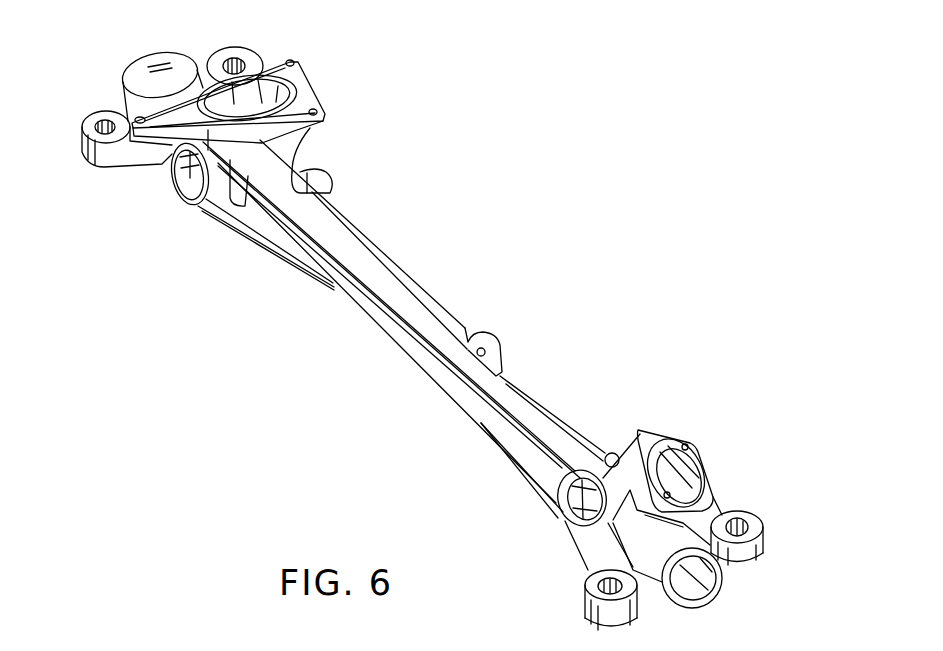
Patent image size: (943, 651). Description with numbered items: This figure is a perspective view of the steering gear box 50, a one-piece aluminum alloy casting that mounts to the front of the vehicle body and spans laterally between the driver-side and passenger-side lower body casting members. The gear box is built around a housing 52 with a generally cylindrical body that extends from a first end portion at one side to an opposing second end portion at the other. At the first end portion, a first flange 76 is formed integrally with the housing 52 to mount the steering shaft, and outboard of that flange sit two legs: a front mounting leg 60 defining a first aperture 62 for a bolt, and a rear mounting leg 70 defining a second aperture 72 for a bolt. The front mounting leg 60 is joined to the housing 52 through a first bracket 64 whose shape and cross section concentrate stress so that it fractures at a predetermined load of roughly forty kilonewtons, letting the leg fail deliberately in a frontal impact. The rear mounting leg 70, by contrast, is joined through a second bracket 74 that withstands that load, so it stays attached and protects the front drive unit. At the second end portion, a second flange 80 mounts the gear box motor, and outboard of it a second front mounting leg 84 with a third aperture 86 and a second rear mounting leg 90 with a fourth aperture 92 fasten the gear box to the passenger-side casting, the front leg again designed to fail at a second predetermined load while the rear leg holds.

The steering gear box 50 is at (437, 268).
The housing 52 is at (384, 335).
The front mounting leg 60 is at (585, 600).
The first aperture 62 is at (625, 586).
The first bracket 64 is at (577, 557).
The rear mounting leg 70 is at (770, 537).
The second aperture 72 is at (738, 518).
The second bracket 74 is at (727, 553).
The first flange 76 is at (688, 470).
The second flange 80 is at (298, 70).
The second front mounting leg 84 is at (82, 148).
The third aperture 86 is at (105, 120).
The second rear mounting leg 90 is at (255, 50).
The fourth aperture 92 is at (233, 58).